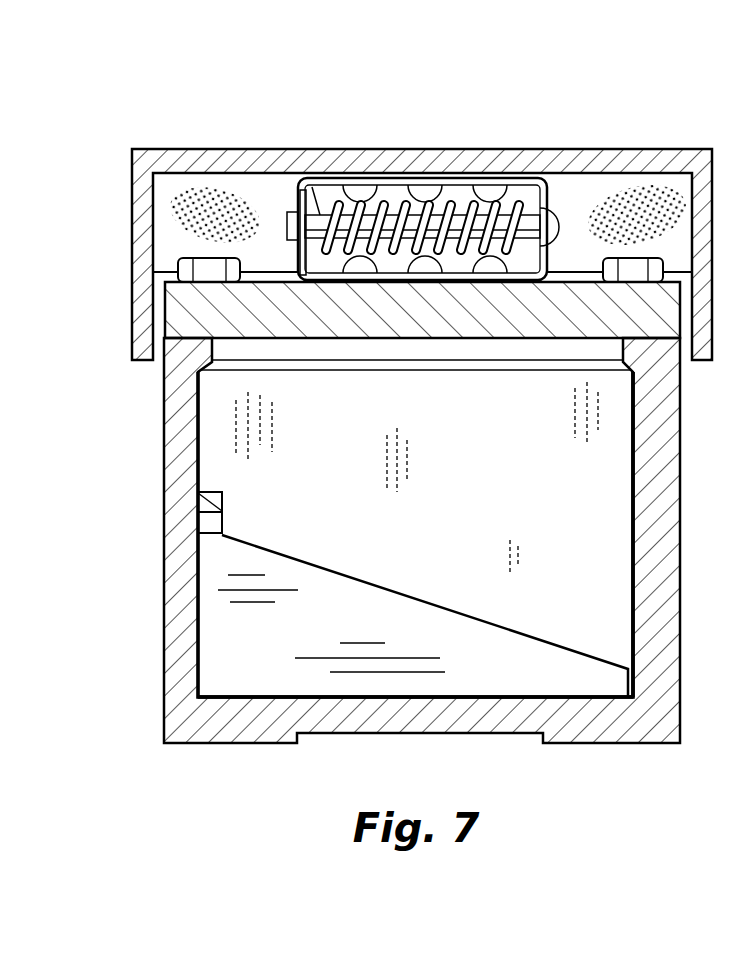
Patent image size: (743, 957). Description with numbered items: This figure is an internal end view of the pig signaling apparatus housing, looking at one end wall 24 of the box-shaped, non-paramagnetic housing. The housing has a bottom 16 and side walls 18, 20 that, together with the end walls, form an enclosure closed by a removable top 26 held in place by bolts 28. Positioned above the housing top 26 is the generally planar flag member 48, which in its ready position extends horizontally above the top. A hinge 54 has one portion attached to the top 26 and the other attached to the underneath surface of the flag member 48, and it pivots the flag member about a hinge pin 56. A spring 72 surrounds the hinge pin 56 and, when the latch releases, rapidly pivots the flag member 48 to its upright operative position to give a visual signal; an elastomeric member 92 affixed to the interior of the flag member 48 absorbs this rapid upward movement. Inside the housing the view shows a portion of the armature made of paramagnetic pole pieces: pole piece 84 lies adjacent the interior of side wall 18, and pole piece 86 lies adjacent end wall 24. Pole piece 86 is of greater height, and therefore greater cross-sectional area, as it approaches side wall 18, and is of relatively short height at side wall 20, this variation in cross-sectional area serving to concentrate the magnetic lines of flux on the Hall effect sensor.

The flag member 48 is at (250, 158).
The hinge 54 is at (330, 176).
The spring 72 is at (400, 180).
The hinge pin 56 is at (462, 215).
The elastomeric member 92 is at (588, 200).
The bolts 28 is at (208, 272).
The removable top 26 is at (480, 312).
The end wall 24 is at (462, 494).
The pole piece 84 is at (222, 502).
The side wall 18 is at (185, 552).
The pole piece 86 is at (390, 608).
The side wall 20 is at (662, 540).
The bottom 16 is at (402, 733).